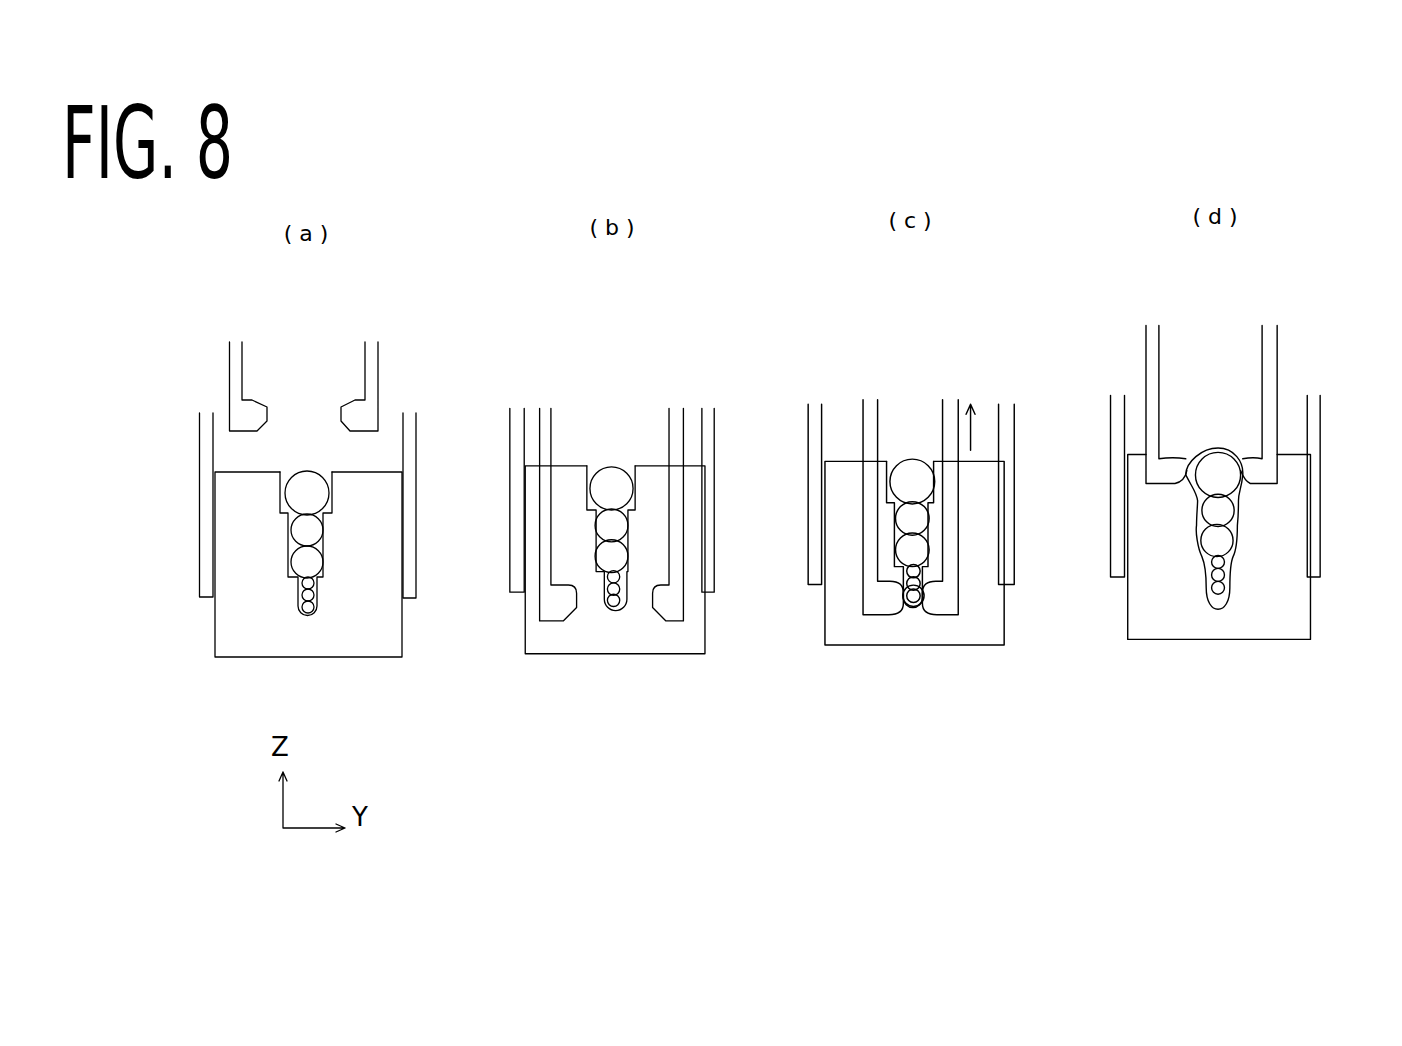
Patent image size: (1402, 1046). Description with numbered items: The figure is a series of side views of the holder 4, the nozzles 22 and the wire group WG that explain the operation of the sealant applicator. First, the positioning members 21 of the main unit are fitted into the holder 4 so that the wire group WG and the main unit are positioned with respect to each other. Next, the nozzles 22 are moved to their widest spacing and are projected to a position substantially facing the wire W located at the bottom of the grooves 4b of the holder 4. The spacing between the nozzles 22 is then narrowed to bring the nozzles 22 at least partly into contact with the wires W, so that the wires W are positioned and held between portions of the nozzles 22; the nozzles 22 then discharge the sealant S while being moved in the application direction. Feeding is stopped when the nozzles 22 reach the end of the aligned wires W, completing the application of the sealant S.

The holder 4 is at (342, 667).
The groove 4b is at (320, 473).
The positioning member 21 is at (207, 547).
The nozzle 22 is at (353, 410).
The wire W is at (313, 603).
The wire group WG is at (272, 552).
The sealant S is at (893, 576).